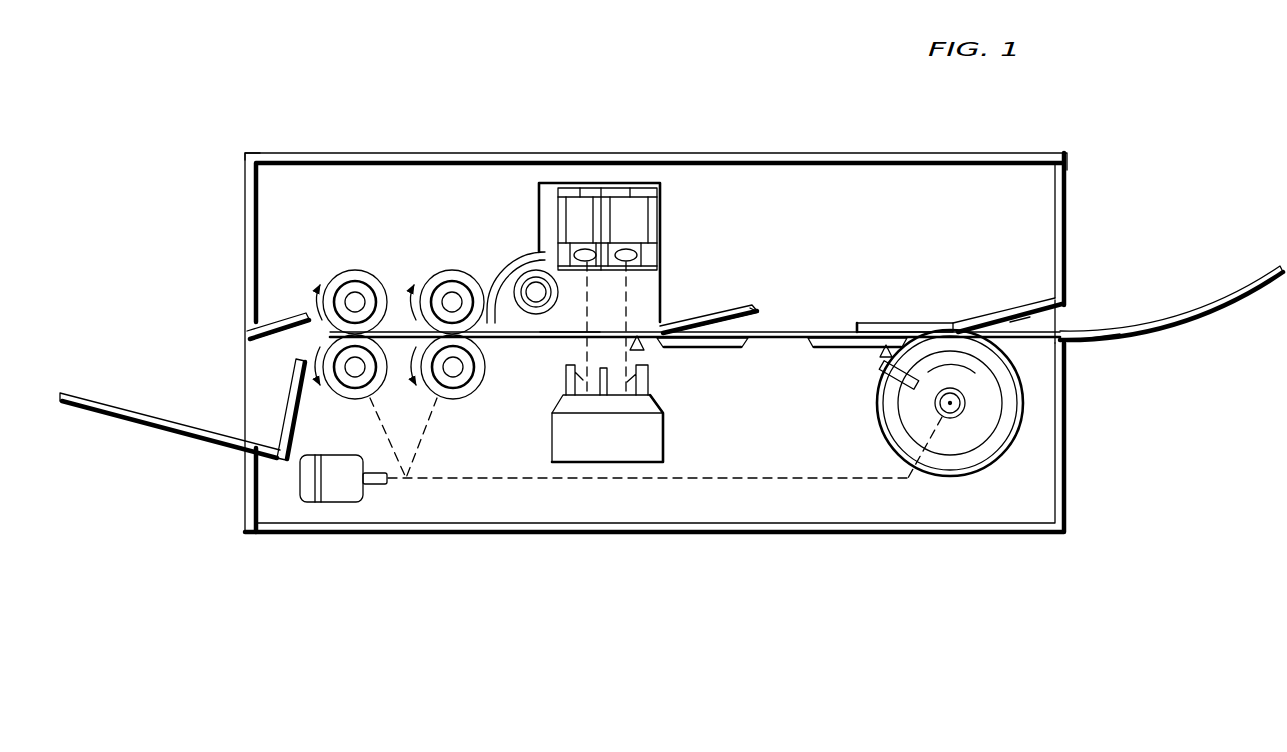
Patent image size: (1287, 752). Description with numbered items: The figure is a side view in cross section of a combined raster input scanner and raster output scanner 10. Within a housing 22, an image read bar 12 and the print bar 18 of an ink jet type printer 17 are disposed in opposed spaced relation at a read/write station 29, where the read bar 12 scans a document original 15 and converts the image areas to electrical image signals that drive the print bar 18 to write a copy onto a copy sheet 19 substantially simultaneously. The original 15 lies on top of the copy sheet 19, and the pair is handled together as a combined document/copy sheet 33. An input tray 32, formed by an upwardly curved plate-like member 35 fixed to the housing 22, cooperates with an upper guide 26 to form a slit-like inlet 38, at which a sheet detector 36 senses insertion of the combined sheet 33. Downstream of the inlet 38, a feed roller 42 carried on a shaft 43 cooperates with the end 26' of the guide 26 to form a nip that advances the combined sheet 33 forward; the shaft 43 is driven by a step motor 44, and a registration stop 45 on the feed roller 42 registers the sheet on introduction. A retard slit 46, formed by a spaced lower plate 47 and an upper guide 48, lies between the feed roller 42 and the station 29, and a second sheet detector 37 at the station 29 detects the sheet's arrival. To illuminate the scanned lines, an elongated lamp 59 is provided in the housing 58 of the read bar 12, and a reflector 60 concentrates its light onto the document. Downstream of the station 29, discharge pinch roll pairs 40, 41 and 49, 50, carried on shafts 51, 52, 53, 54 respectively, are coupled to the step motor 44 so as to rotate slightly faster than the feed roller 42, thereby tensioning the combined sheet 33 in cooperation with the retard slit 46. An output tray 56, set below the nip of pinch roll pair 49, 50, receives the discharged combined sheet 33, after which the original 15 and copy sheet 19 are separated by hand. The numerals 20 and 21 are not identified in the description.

The combined raster input scanner and raster output scanner 10 is at (318, 140).
The housing 22 is at (1080, 150).
The housing of read bar 58 is at (528, 190).
The image read bar 12 is at (668, 222).
The elongated lamp 59 is at (533, 270).
The reflector 60 is at (510, 268).
The shaft 53 is at (350, 298).
The pinch roll 49 is at (366, 270).
The shaft 51 is at (456, 296).
The pinch roll 40 is at (440, 283).
The print station 21 is at (602, 318).
The print zone 20 is at (638, 322).
The upper guide 48 is at (745, 307).
The retard slit 46 is at (755, 323).
The document original 15 is at (822, 330).
The end of guide 26' is at (899, 297).
The upper guide 26 is at (1007, 301).
The combined document original and copy sheet 33 is at (1024, 323).
The inlet 38 is at (1065, 318).
The upwardly curved plate-like member 35 is at (1190, 318).
The input tray 32 is at (1098, 352).
The read/write station 29 is at (566, 348).
The sheet detector 37 is at (645, 350).
The lower plate 47 is at (698, 348).
The copy sheet 19 is at (788, 344).
The sheet detector 36 is at (878, 353).
The registration stop 45 is at (881, 378).
The shaft 43 is at (937, 405).
The feed roller 42 is at (893, 447).
The print bar 18 is at (640, 437).
The ink jet type printer 17 is at (548, 425).
The step motor 44 is at (350, 463).
The shaft 54 is at (352, 367).
The pinch roll 50 is at (376, 386).
The shaft 41 is at (450, 368).
The shaft 52 is at (470, 385).
The output tray 56 is at (178, 428).